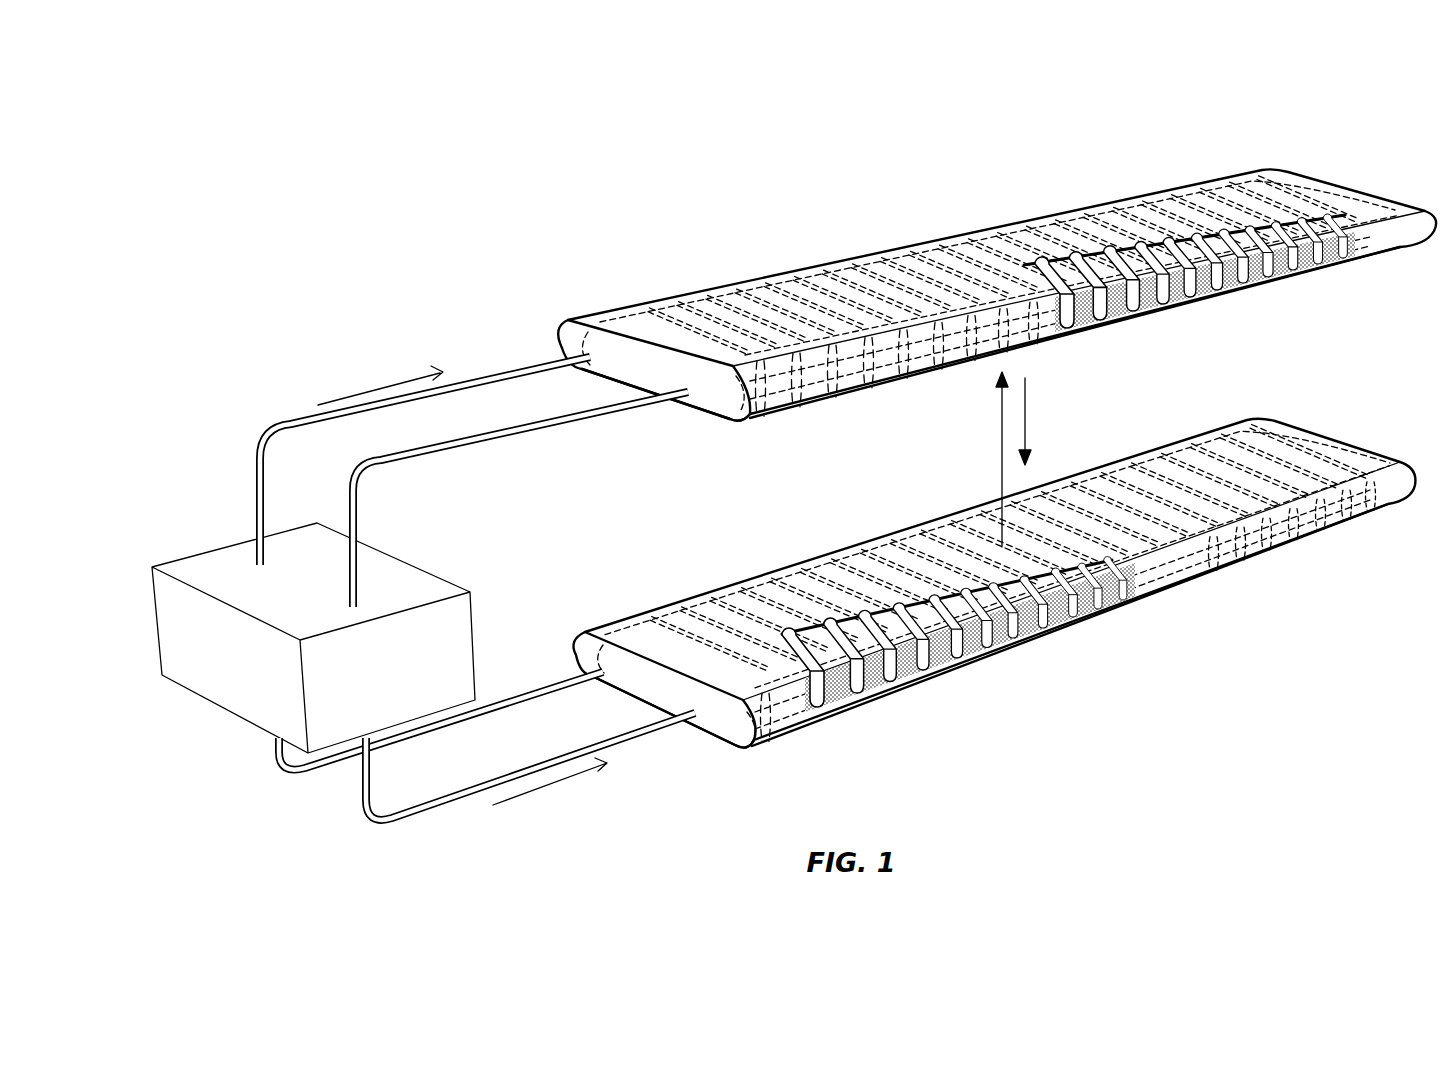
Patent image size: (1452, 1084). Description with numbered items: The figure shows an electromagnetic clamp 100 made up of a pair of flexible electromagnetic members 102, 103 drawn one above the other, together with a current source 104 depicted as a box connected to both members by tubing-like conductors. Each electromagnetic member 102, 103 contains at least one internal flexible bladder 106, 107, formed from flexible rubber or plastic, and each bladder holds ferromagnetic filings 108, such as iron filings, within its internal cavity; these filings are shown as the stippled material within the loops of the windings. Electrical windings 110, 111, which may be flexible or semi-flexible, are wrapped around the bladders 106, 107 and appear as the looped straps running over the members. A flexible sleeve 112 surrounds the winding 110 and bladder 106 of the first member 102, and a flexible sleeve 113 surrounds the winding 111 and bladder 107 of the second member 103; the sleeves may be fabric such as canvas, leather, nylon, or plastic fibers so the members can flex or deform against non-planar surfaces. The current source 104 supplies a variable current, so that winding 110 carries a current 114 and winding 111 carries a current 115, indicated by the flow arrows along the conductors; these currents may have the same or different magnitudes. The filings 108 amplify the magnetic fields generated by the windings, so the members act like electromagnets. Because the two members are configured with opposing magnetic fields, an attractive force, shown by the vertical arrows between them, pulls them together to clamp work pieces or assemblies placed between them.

The electromagnetic clamp 100 is at (408, 172).
The flexible electromagnetic member 102 is at (742, 233).
The flexible electromagnetic member 103 is at (1240, 582).
The current source 104 is at (217, 572).
The internal flexible bladder 106 is at (1338, 243).
The internal flexible bladder 107 is at (1117, 583).
The ferromagnetic filings 108 is at (1272, 278).
The electrical winding 110 is at (1192, 293).
The electrical winding 111 is at (898, 690).
The flexible sleeve 112 is at (777, 412).
The flexible sleeve 113 is at (778, 738).
The current 114 is at (378, 391).
The current 115 is at (562, 782).